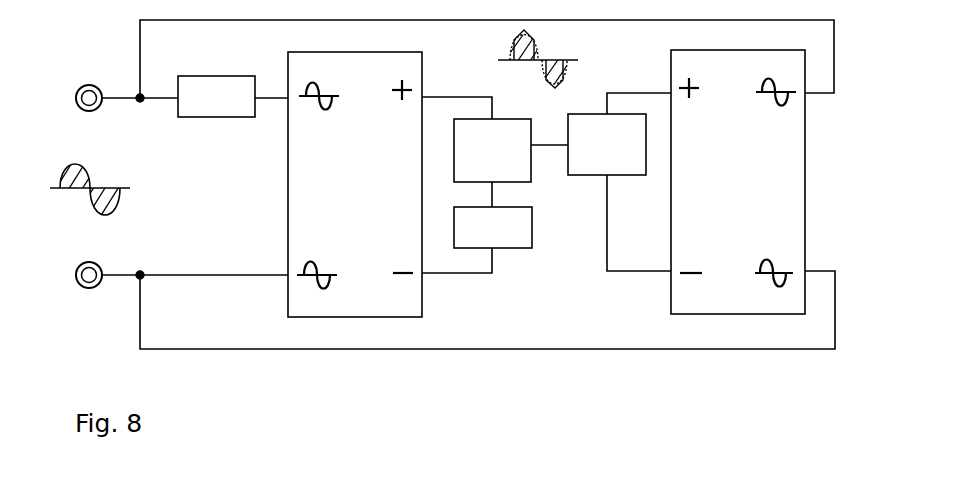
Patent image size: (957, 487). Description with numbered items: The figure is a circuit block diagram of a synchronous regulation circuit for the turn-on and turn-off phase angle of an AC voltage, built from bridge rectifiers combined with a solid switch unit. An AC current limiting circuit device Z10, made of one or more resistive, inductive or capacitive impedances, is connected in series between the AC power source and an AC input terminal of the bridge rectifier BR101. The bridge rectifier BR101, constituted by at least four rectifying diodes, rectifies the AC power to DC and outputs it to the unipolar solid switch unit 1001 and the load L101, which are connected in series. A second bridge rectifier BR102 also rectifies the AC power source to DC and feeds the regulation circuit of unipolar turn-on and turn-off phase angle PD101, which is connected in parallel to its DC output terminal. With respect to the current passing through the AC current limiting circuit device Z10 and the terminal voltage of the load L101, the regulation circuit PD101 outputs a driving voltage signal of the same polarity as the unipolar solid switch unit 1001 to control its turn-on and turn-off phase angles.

The AC current limiting circuit device Z10 is at (216, 96).
The bridge rectifier BR101 is at (355, 184).
The unipolar solid switch unit 1001 is at (492, 150).
The load L101 is at (493, 227).
The regulation circuit of unipolar turn-on and turn-off phase angle PD101 is at (607, 144).
The bridge rectifier BR102 is at (738, 182).